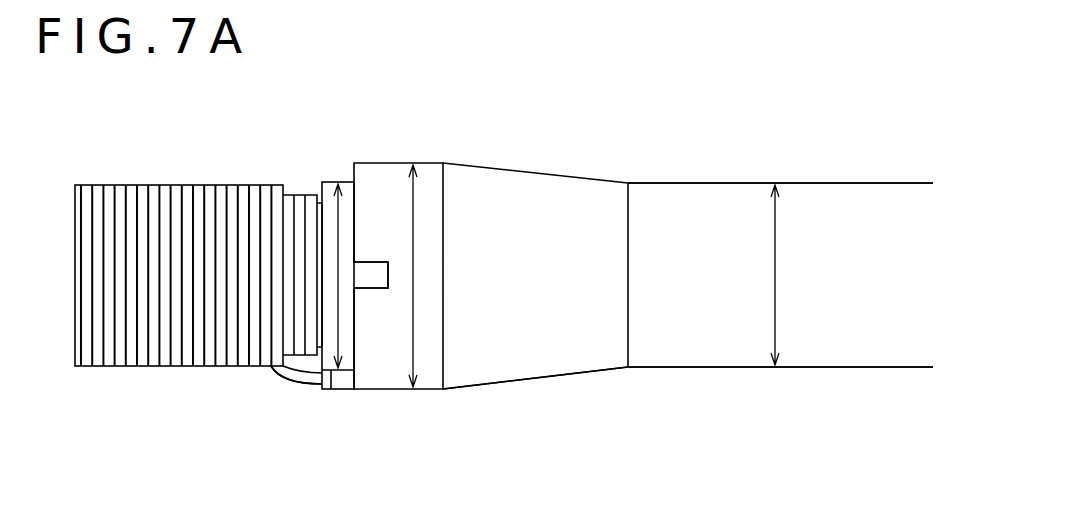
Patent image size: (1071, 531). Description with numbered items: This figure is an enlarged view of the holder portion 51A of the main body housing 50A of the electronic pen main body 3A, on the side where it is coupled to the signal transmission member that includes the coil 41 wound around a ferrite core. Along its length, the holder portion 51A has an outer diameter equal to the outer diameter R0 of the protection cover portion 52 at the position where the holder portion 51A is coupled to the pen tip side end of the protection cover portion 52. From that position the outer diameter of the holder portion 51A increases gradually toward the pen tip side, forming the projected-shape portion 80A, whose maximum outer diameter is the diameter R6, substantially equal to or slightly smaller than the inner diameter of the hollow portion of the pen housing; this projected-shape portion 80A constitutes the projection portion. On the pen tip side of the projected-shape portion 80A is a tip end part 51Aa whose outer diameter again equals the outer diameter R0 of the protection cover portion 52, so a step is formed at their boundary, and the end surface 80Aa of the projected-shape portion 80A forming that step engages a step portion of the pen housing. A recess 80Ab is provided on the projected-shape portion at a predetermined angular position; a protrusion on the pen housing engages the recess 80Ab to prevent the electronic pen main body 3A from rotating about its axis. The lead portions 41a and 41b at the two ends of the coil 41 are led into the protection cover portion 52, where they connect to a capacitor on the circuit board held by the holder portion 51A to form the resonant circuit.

The electronic pen main body 3A is at (706, 172).
The coil 41 is at (165, 185).
The lead portion 41a is at (290, 380).
The lead portion 41b is at (258, 409).
The main body housing 50A is at (738, 452).
The holder portion 51A is at (569, 367).
The tip end part 51Aa is at (331, 390).
The protection cover portion 52 is at (742, 367).
The projected-shape portion 80A is at (393, 173).
The end surface 80Aa is at (353, 177).
The recess 80Ab is at (377, 280).
The outer diameter R0 is at (559, 276).
The maximum outer diameter R6 is at (414, 276).